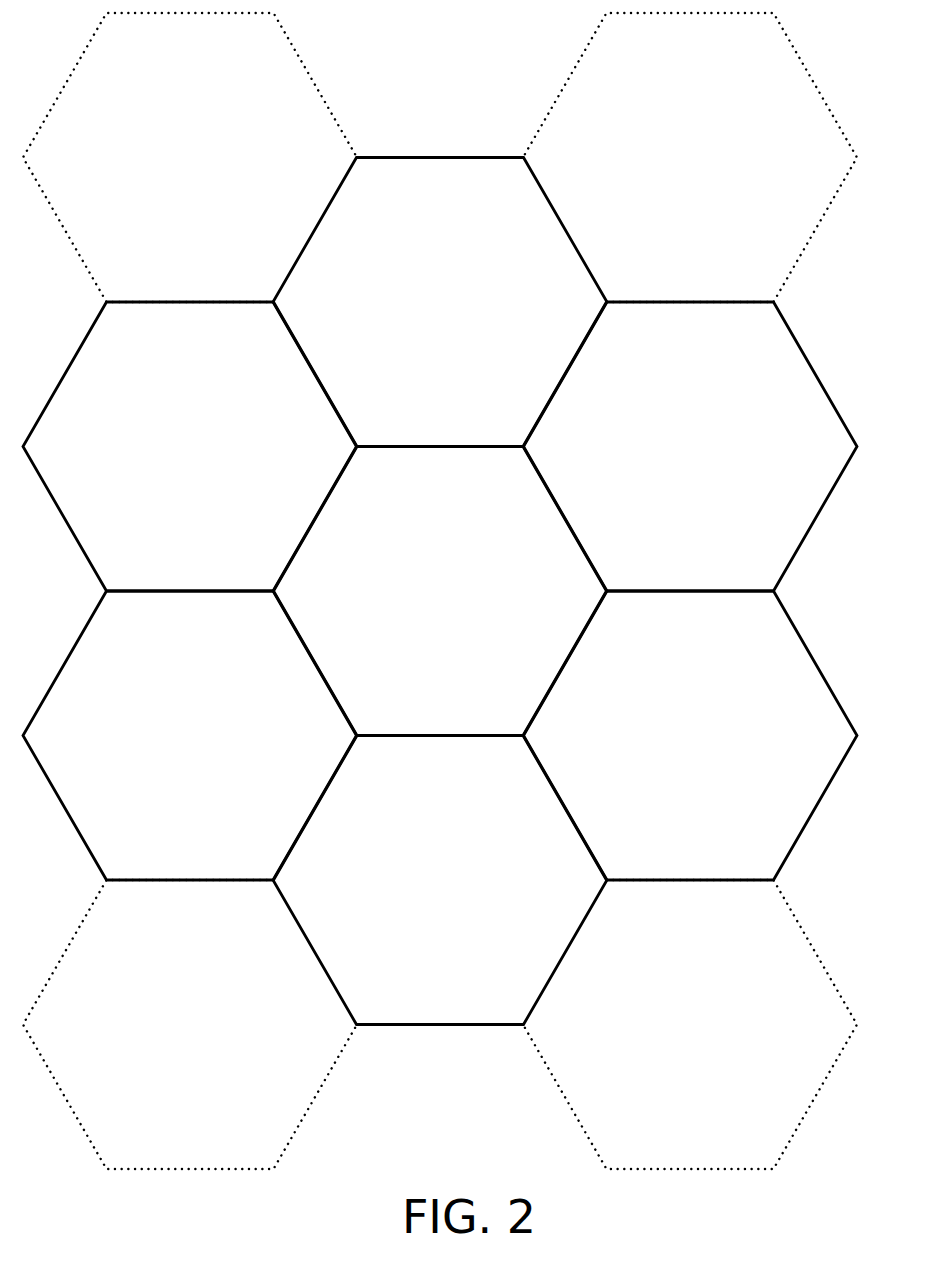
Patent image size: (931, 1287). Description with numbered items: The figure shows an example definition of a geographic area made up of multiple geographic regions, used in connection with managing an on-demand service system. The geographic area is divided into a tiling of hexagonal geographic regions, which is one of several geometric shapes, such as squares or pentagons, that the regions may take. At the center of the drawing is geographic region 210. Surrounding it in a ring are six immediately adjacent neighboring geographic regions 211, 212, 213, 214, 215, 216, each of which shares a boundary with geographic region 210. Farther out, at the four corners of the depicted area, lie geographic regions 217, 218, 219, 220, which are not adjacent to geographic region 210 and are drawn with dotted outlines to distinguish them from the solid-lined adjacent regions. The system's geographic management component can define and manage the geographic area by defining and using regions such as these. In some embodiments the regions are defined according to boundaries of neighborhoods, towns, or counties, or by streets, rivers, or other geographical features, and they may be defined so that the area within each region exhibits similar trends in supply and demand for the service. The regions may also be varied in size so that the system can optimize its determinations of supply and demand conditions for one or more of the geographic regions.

The geographic region 210 is at (425, 707).
The geographic region 211 is at (434, 1002).
The geographic region 212 is at (174, 847).
The geographic region 213 is at (174, 553).
The geographic region 214 is at (434, 411).
The geographic region 215 is at (678, 553).
The geographic region 216 is at (678, 830).
The geographic region 217 is at (688, 1141).
The geographic region 218 is at (174, 1141).
The geographic region 219 is at (174, 265).
The geographic region 220 is at (678, 265).